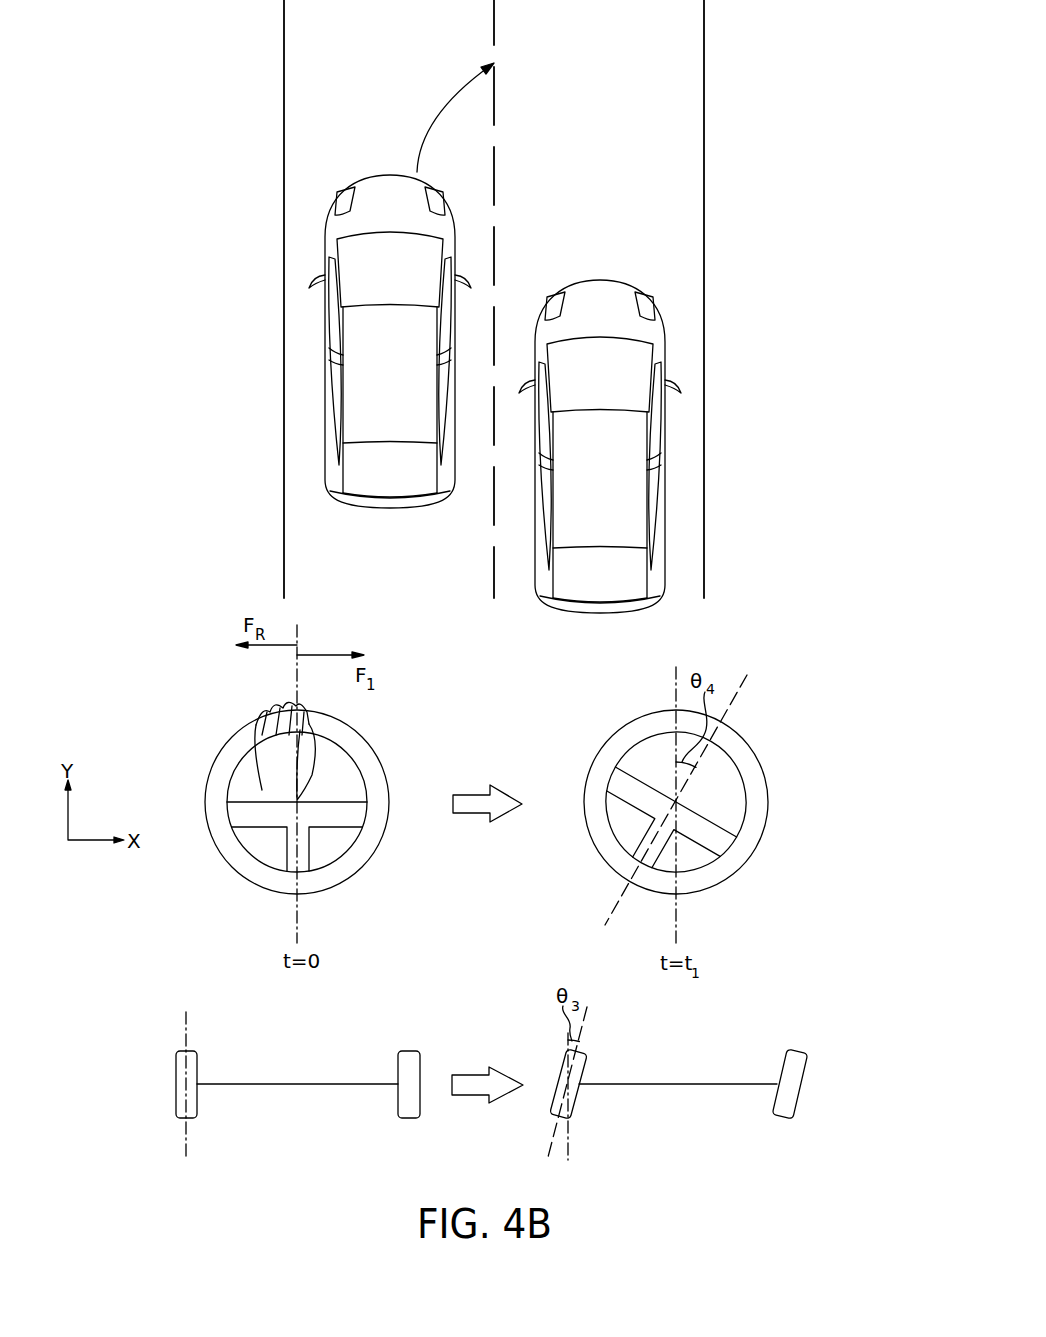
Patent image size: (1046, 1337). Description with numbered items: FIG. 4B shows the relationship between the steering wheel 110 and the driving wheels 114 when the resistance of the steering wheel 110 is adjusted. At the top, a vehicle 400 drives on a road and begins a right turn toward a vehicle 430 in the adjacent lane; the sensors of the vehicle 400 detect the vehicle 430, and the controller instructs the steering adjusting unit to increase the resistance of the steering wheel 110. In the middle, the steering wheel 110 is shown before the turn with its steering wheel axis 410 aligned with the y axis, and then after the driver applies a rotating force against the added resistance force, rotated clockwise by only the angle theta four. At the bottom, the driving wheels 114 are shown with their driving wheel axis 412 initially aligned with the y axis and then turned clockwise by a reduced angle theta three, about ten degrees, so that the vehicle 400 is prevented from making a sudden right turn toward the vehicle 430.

The vehicle 400 is at (360, 176).
The vehicle 430 is at (597, 280).
The steering wheel 110 is at (205, 802).
The steering wheel axis 410 is at (297, 918).
The driving wheels 114 is at (176, 1085).
The driving wheel axis 412 is at (186, 1020).